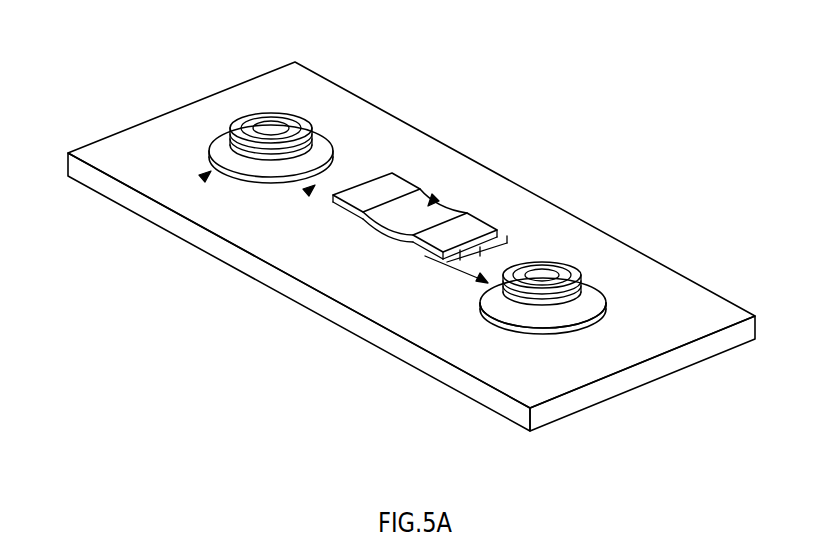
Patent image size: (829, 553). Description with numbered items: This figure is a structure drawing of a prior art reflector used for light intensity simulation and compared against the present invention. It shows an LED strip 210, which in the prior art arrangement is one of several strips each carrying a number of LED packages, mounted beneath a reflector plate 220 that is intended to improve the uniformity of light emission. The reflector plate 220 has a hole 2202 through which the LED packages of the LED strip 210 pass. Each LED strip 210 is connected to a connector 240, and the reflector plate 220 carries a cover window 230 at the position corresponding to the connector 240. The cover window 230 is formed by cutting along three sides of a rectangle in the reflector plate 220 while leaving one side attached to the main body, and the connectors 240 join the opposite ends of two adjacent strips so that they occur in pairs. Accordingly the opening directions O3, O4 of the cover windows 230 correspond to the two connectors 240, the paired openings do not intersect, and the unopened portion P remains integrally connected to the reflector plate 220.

The LED strip 210 is at (271, 126).
The reflector plate 220 is at (602, 255).
The hole 2202 is at (206, 176).
The cover window 230 is at (392, 172).
The connector 240 is at (337, 212).
The unopened portion P is at (434, 199).
The opening direction O3 is at (447, 261).
The opening direction O4 is at (308, 191).